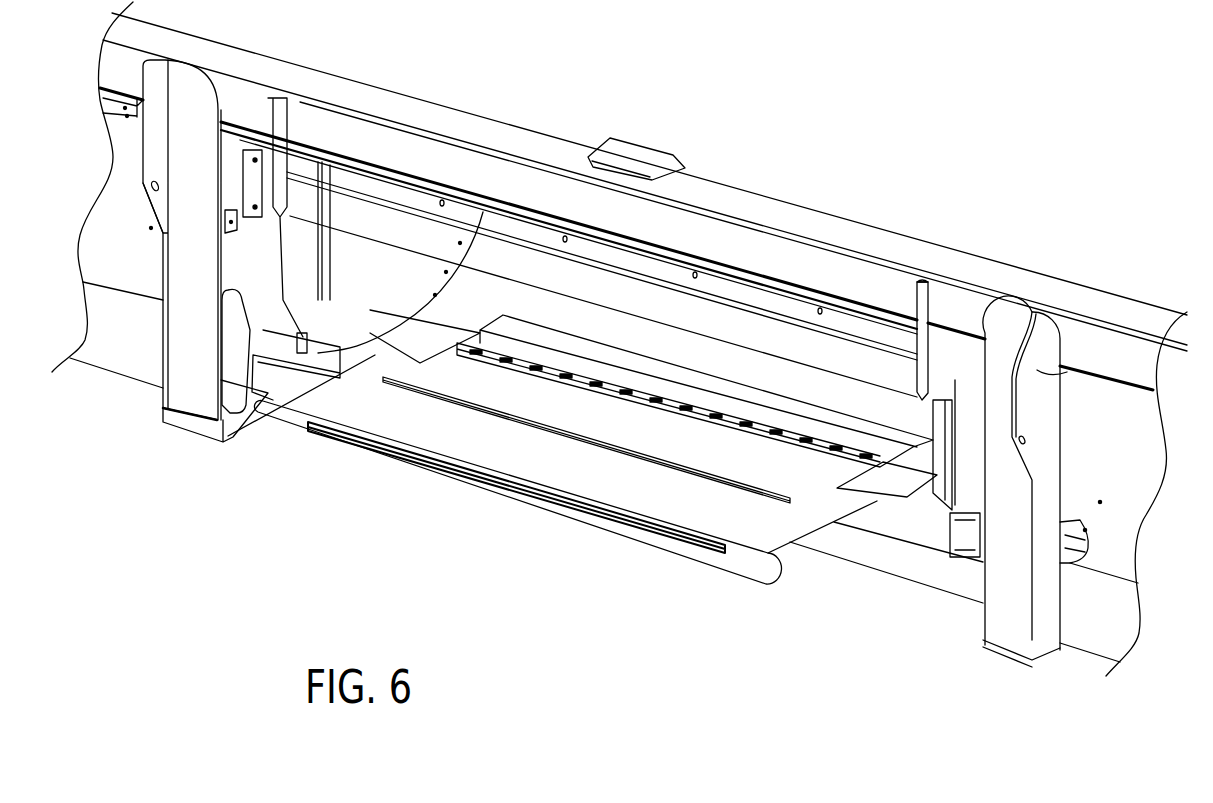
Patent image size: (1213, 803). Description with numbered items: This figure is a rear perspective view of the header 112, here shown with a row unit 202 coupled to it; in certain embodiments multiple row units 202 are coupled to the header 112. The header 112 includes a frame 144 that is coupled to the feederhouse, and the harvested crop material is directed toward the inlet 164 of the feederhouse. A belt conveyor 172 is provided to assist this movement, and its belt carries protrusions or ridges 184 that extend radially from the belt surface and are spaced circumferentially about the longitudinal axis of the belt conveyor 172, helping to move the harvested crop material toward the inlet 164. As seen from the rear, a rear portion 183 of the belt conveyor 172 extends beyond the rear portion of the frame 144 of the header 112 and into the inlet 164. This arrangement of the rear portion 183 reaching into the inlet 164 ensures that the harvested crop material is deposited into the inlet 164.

The header 112 is at (1069, 277).
The frame 144 is at (1012, 285).
The row unit 202 is at (951, 159).
The inlet 164 is at (413, 266).
The belt conveyor 172 is at (506, 498).
The rear portion 183 is at (581, 517).
The protrusions 184 is at (733, 482).